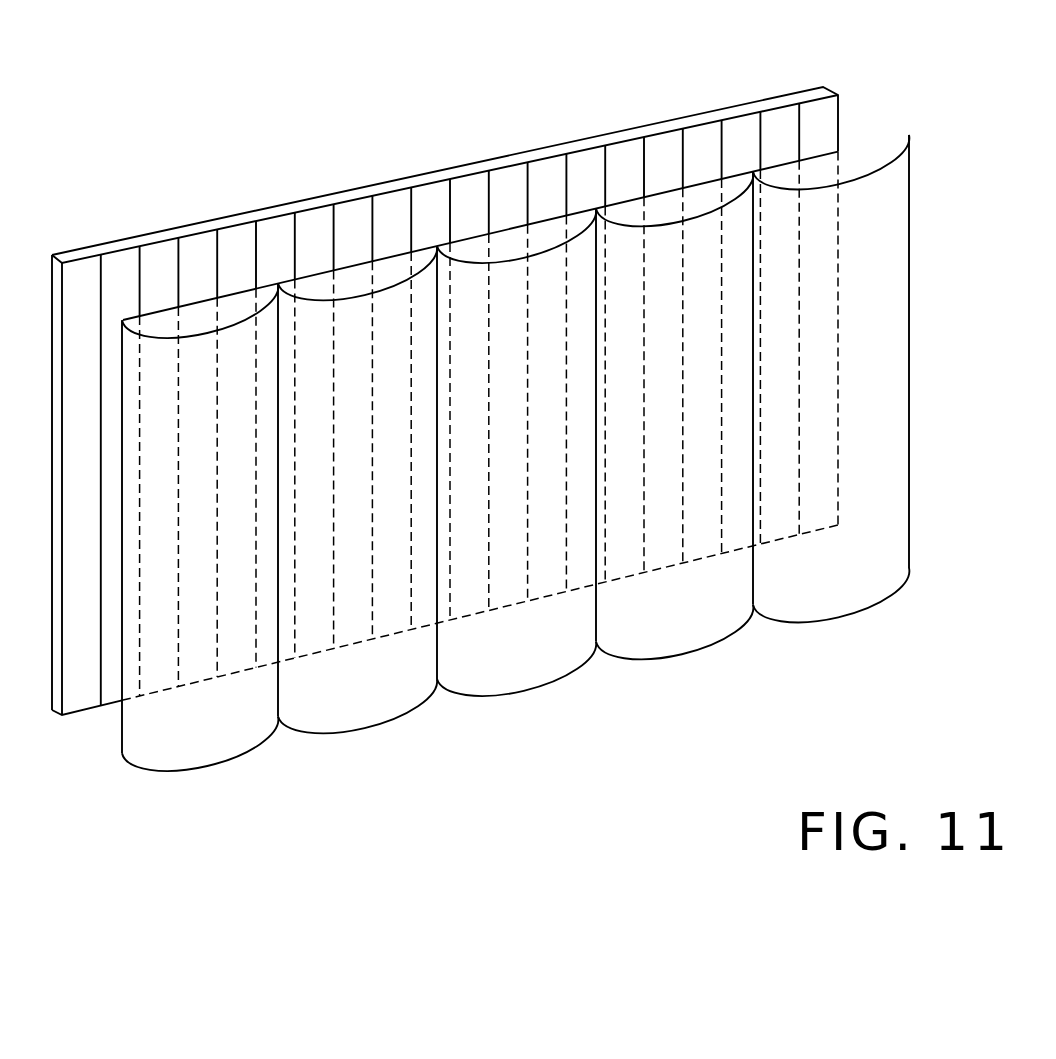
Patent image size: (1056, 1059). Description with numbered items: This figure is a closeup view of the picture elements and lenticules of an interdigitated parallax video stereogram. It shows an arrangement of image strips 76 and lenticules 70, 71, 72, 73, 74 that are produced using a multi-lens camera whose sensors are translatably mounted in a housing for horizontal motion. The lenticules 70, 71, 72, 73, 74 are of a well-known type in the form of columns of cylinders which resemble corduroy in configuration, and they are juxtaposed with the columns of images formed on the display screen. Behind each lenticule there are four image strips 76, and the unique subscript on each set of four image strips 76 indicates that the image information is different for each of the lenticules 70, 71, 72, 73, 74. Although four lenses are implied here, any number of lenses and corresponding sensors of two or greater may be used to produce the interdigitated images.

The lenticule 70 is at (203, 562).
The lenticule 71 is at (369, 527).
The lenticule 72 is at (525, 496).
The lenticule 73 is at (683, 463).
The lenticule 74 is at (851, 424).
The image strips 76 is at (498, 379).